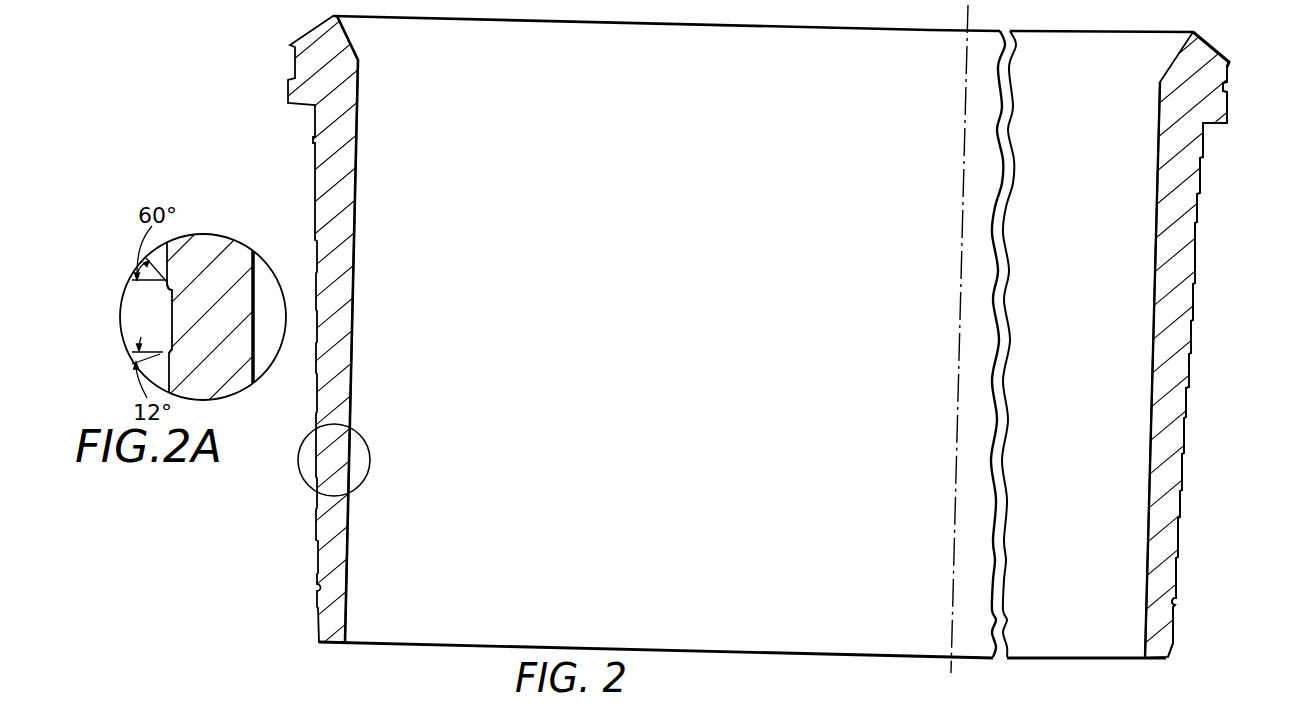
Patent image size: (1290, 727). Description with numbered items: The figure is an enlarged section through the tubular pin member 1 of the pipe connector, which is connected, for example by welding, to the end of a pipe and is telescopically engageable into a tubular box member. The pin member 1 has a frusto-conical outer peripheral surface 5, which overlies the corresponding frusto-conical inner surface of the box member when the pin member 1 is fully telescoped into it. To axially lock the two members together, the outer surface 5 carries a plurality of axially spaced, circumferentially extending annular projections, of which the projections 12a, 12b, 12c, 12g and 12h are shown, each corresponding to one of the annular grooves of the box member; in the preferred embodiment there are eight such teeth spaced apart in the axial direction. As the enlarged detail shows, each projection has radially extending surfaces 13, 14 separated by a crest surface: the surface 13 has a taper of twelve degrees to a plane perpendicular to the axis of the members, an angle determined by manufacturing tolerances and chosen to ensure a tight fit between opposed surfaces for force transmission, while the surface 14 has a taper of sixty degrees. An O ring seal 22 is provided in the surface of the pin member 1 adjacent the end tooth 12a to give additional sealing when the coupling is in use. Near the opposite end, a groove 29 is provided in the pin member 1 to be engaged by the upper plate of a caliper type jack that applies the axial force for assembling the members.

In FIG. 2, the tubular pin member 1 is at (1166, 263).
In FIG. 2, the frusto-conical outer peripheral surface 5 is at (1193, 375).
In FIG. 2, the annular projection 12a is at (1164, 640).
In FIG. 2, the annular projection 12b is at (1172, 567).
In FIG. 2, the annular projection 12c is at (1184, 512).
In FIG. 2, the annular projection 12g is at (1196, 243).
In FIG. 2, the annular projection 12h is at (1201, 170).
In FIG. 2A, the radially extending surface 13 is at (171, 350).
In FIG. 2A, the radially extending surface 14 is at (167, 287).
In FIG. 2, the O ring seal 22 is at (1172, 604).
In FIG. 2, the groove 29 is at (1225, 80).